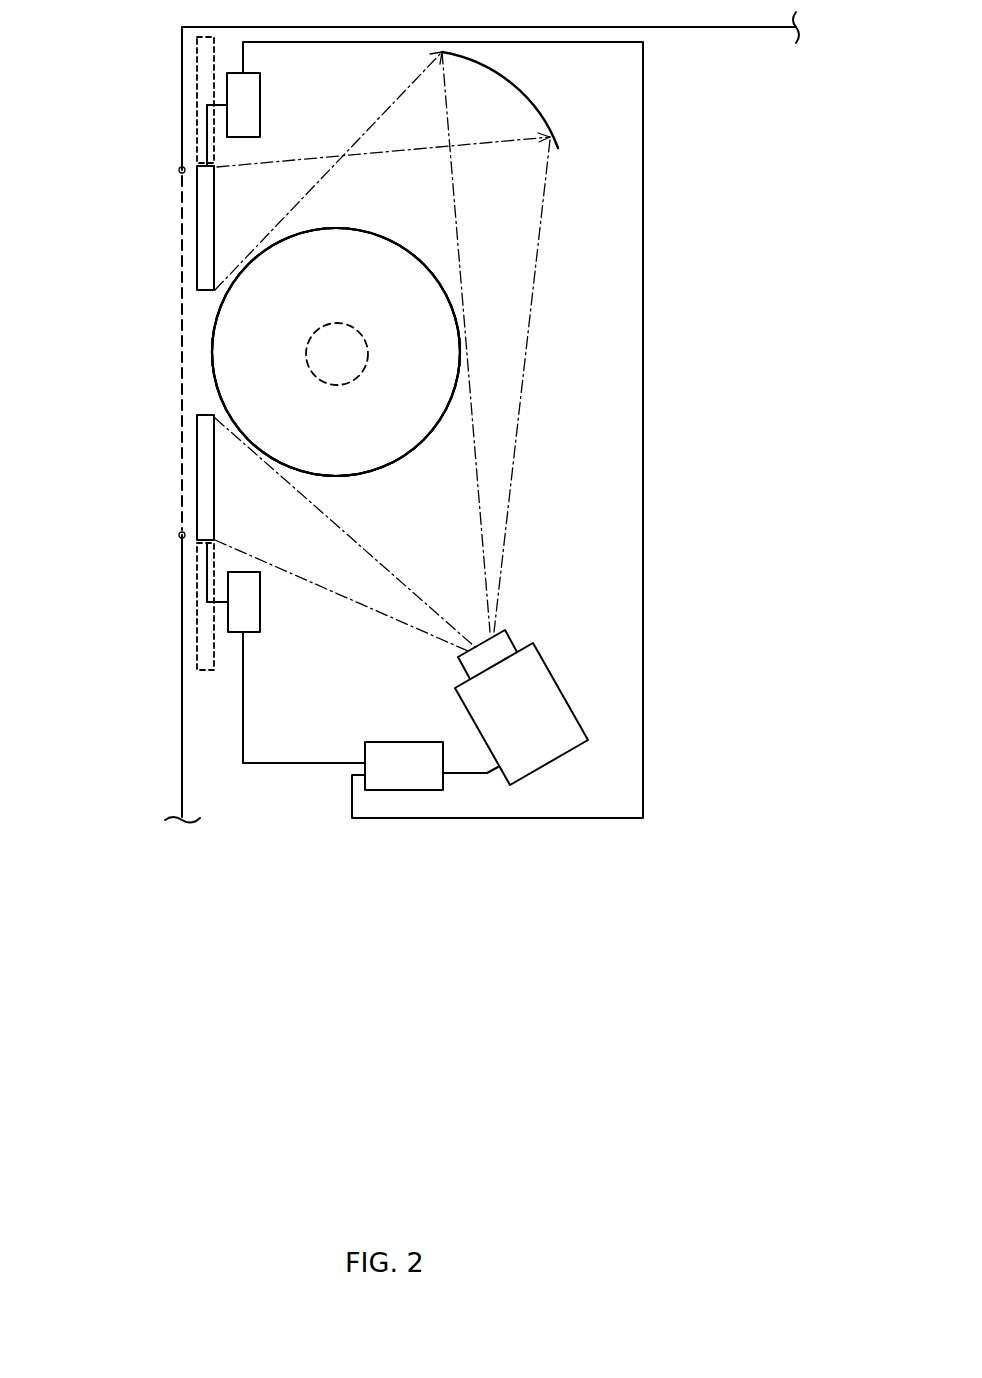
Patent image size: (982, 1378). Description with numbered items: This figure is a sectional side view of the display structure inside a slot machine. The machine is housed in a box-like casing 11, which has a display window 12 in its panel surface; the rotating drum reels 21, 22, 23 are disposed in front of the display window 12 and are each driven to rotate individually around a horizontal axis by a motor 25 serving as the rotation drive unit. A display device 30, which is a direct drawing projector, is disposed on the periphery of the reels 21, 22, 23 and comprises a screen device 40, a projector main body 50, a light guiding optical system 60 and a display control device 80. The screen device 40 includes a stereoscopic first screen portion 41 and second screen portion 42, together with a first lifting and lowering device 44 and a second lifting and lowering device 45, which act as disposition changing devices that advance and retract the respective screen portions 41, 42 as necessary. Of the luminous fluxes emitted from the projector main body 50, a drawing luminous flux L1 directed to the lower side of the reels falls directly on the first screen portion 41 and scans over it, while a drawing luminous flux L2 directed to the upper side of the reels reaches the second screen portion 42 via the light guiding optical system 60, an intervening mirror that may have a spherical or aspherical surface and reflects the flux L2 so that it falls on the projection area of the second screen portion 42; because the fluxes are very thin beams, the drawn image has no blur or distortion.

The casing 11 is at (182, 758).
The display window 12 is at (178, 372).
The rotating drum reel 21 is at (395, 462).
The rotating drum reel 22 is at (347, 394).
The rotating drum reel 23 is at (336, 352).
The motor 25 is at (355, 325).
The display device 30 is at (687, 607).
The screen device 40 is at (175, 208).
The first screen portion 41 is at (198, 512).
The second screen portion 42 is at (203, 80).
The first lifting and lowering device 44 is at (250, 633).
The second lifting and lowering device 45 is at (248, 110).
The projector main body 50 is at (553, 690).
The light guiding optical system 60 is at (538, 113).
The display control device 80 is at (407, 747).
The drawing luminous flux L1 is at (355, 600).
The drawing luminous flux L2 is at (517, 460).